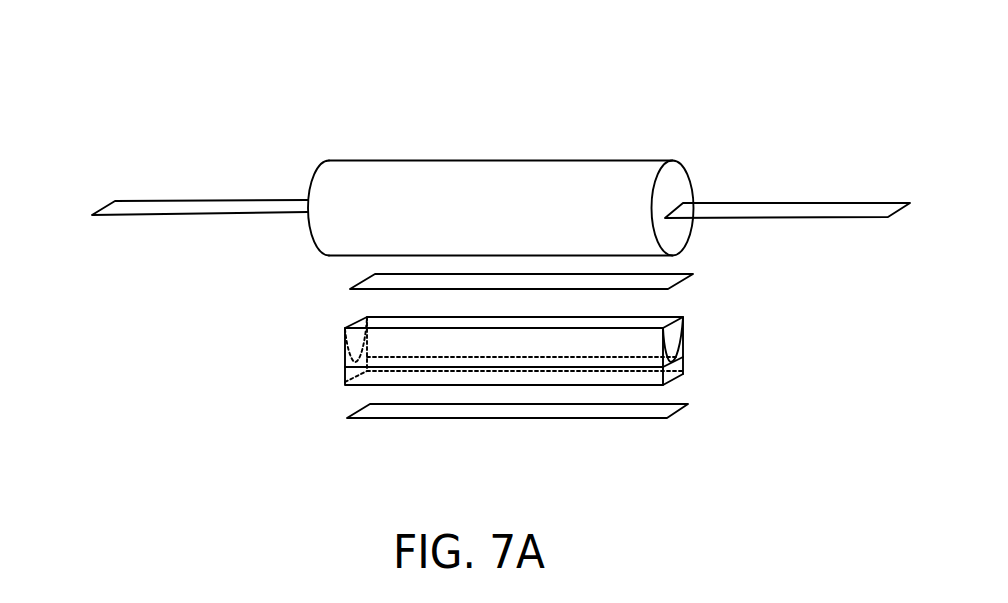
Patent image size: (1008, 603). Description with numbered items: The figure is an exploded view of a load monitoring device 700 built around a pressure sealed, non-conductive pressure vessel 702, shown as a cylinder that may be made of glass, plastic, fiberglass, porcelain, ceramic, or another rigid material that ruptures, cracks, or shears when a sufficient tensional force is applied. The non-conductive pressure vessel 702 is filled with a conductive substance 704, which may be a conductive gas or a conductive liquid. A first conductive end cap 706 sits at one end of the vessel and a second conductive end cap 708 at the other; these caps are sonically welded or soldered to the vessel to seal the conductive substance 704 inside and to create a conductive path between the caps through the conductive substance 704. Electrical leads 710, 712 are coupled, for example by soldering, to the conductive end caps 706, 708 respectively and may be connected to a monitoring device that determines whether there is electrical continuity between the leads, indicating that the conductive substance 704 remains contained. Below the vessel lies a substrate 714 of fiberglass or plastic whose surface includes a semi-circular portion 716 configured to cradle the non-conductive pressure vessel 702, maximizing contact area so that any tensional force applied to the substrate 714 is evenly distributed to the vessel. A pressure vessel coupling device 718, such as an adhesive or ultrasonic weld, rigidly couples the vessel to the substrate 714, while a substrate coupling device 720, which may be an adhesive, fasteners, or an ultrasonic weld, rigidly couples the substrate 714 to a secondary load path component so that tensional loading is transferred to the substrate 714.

The load monitoring device 700 is at (147, 86).
The non-conductive pressure vessel 702 is at (450, 160).
The conductive substance 704 is at (513, 195).
The first conductive end cap 706 is at (690, 178).
The second conductive end cap 708 is at (320, 177).
The electrical lead 710 is at (800, 217).
The electrical lead 712 is at (185, 215).
The substrate 714 is at (343, 373).
The semi-circular portion 716 is at (683, 340).
The pressure vessel coupling device 718 is at (693, 275).
The substrate coupling device 720 is at (505, 420).